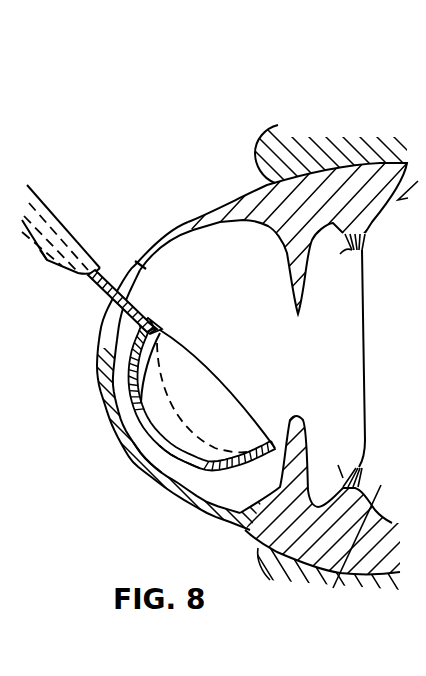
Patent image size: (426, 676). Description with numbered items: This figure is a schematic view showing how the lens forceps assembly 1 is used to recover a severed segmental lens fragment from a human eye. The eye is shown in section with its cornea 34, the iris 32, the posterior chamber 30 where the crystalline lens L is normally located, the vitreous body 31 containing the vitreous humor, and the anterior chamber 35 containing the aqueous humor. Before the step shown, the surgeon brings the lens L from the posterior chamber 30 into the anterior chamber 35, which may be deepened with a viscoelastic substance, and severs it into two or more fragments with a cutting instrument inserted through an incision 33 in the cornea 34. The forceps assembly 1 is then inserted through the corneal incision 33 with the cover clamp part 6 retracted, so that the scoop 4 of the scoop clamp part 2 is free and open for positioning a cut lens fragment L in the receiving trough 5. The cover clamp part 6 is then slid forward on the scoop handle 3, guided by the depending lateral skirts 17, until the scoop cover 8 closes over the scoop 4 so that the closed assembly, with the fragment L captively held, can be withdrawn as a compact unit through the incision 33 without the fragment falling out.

The lens forceps assembly 1 is at (90, 239).
The scoop clamp part 2 is at (97, 291).
The scoop handle 3 is at (145, 308).
The scoop 4 is at (130, 433).
The receiving trough 5 is at (185, 452).
The cover clamp part 6 is at (62, 224).
The scoop cover 8 is at (82, 246).
The lateral skirt 17 is at (47, 262).
The posterior chamber 30 is at (356, 312).
The vitreous body 31 is at (242, 510).
The iris 32 is at (293, 304).
The incision 33 is at (105, 331).
The cornea 34 is at (188, 226).
The anterior chamber 35 is at (136, 456).
The lens L is at (185, 392).